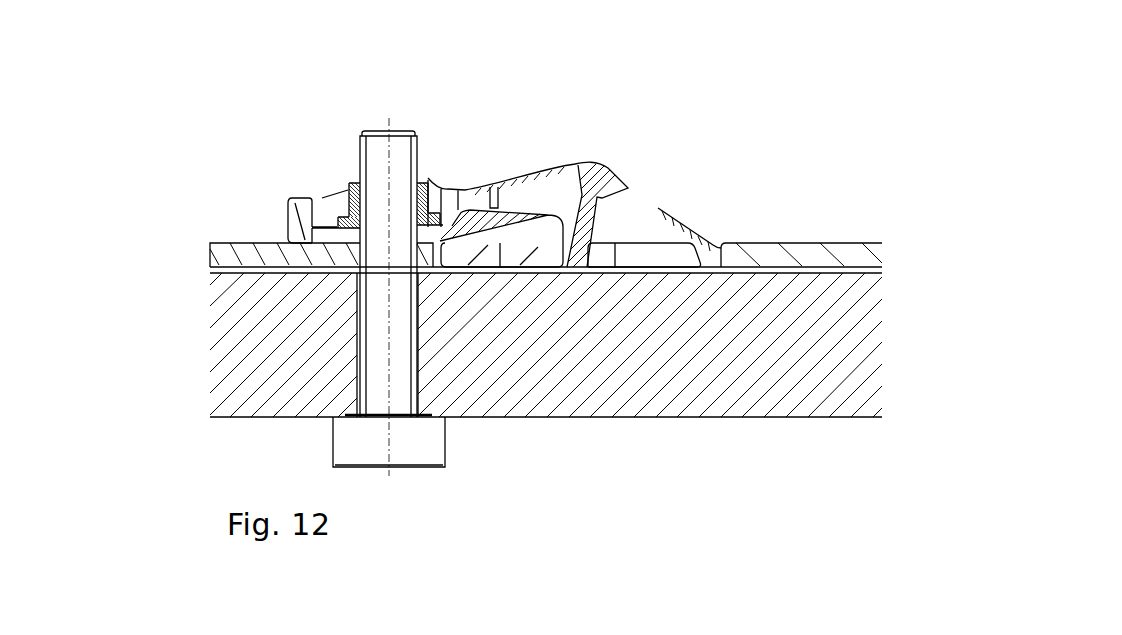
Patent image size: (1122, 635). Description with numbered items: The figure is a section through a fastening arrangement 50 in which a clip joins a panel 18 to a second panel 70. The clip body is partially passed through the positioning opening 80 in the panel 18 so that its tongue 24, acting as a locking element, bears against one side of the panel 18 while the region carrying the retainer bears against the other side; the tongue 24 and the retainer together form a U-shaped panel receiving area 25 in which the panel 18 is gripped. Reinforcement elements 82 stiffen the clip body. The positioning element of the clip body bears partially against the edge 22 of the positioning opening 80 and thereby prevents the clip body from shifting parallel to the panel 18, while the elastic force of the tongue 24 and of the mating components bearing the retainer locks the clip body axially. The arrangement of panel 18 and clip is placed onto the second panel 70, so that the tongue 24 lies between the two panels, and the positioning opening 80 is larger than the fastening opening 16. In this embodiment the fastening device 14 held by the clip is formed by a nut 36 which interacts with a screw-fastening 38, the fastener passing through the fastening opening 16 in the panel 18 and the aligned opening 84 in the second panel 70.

The fastening device 14 is at (350, 190).
The fastening opening 16 is at (418, 262).
The panel 18 is at (222, 257).
The edge of the positioning opening 22 is at (721, 245).
The tongue 24 is at (300, 270).
The U-shaped panel receiving area 25 is at (528, 232).
The nut 36 is at (425, 188).
The screw-fastening 38 is at (425, 462).
The fastening arrangement 50 is at (851, 133).
The second panel 70 is at (881, 338).
The positioning opening 80 is at (652, 250).
The reinforcement elements 82 is at (585, 166).
The opening in the second panel 84 is at (360, 350).